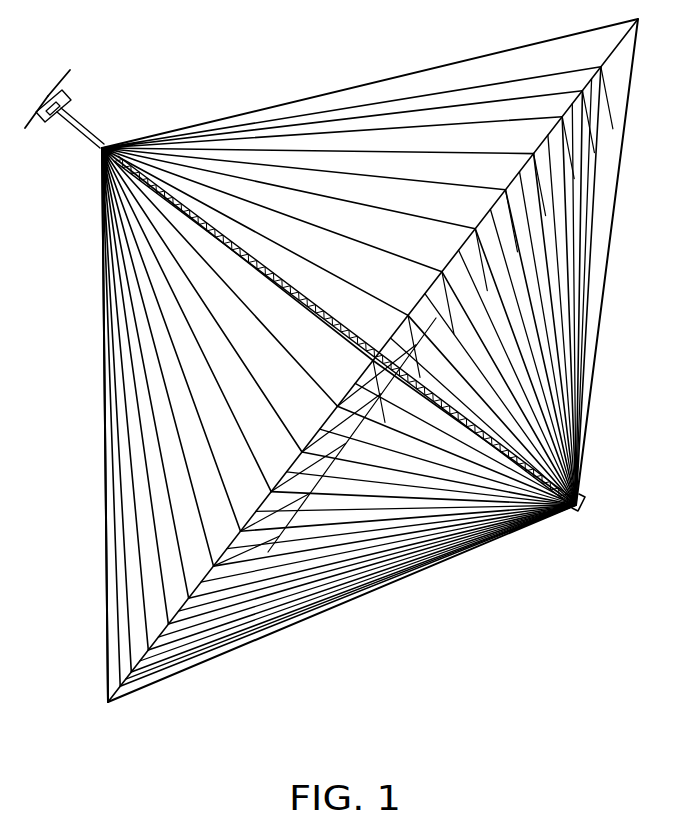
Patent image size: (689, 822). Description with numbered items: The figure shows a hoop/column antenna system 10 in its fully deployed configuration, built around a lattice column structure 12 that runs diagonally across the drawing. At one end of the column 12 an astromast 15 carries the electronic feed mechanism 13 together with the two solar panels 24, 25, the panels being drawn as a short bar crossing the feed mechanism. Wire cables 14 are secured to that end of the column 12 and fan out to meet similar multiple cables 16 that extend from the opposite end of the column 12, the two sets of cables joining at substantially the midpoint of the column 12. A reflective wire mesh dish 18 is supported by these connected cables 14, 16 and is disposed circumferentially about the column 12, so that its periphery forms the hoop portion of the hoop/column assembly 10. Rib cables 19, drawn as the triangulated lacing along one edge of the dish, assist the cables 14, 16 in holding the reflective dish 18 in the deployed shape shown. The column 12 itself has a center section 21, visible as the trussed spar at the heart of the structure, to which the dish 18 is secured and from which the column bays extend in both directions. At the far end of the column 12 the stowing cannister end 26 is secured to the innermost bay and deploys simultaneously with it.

The hoop/column antenna system 10 is at (297, 78).
The lattice column structure 12 is at (222, 248).
The electronic feed mechanism 13 is at (48, 100).
The wire cables 14 is at (120, 456).
The astromast 15 is at (85, 124).
The multiple cables 16 is at (463, 527).
The reflective wire mesh dish 18 is at (340, 508).
The rib cables 19 is at (502, 257).
The center section 21 is at (345, 339).
The solar panel 24 is at (33, 130).
The solar panel 25 is at (72, 79).
The stowing cannister end 26 is at (578, 511).